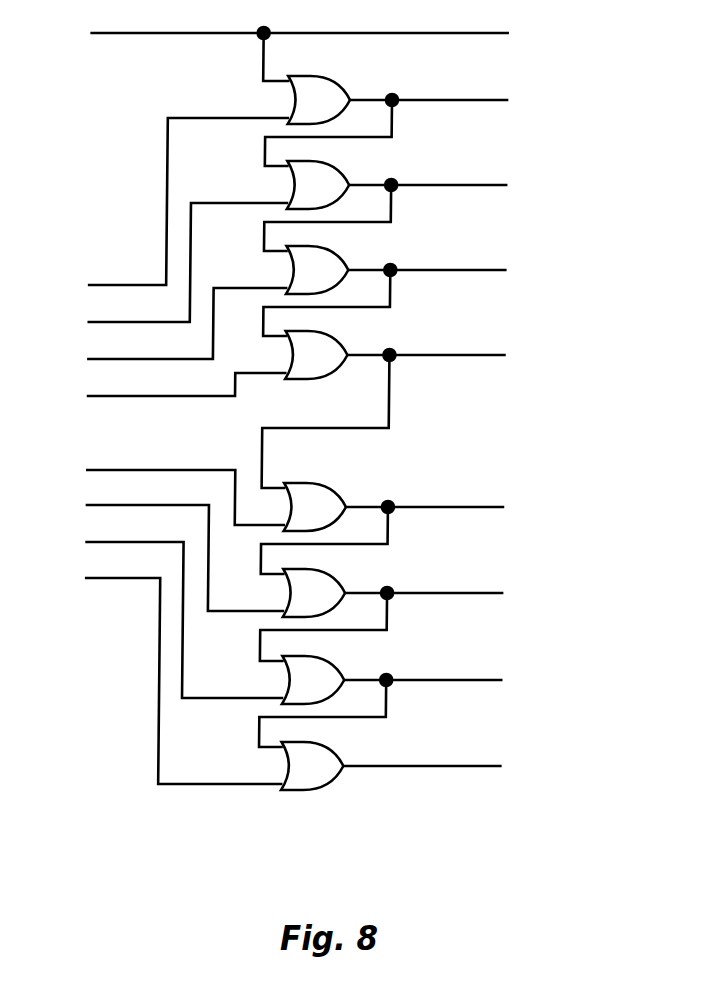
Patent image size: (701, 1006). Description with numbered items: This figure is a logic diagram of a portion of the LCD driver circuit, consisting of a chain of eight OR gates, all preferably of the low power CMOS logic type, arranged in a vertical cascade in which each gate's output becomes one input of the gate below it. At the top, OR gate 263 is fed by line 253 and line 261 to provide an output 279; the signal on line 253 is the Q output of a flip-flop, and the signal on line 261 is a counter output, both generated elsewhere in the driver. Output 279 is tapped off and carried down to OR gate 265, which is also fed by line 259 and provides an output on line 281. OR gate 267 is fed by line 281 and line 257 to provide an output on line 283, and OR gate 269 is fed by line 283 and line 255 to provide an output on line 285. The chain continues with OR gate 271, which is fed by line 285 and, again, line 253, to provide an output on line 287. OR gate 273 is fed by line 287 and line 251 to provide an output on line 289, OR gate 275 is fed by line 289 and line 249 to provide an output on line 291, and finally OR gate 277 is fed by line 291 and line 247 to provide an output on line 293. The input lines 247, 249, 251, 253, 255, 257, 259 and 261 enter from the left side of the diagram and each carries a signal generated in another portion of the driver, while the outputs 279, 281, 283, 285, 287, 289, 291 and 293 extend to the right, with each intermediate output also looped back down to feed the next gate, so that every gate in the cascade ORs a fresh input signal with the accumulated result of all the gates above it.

The line 247 is at (120, 578).
The line 249 is at (120, 542).
The line 251 is at (120, 505).
The line 253 is at (120, 34).
The line 255 is at (120, 396).
The line 257 is at (120, 359).
The line 259 is at (120, 322).
The line 261 is at (120, 285).
The OR gate 263 is at (318, 99).
The OR gate 265 is at (318, 184).
The OR gate 267 is at (318, 269).
The OR gate 269 is at (318, 354).
The OR gate 271 is at (318, 506).
The OR gate 273 is at (318, 592).
The OR gate 275 is at (318, 679).
The OR gate 277 is at (318, 765).
The output 279 is at (485, 100).
The line 281 is at (485, 185).
The line 283 is at (485, 270).
The line 285 is at (485, 355).
The line 287 is at (485, 507).
The line 289 is at (485, 593).
The line 291 is at (485, 680).
The line 293 is at (485, 766).